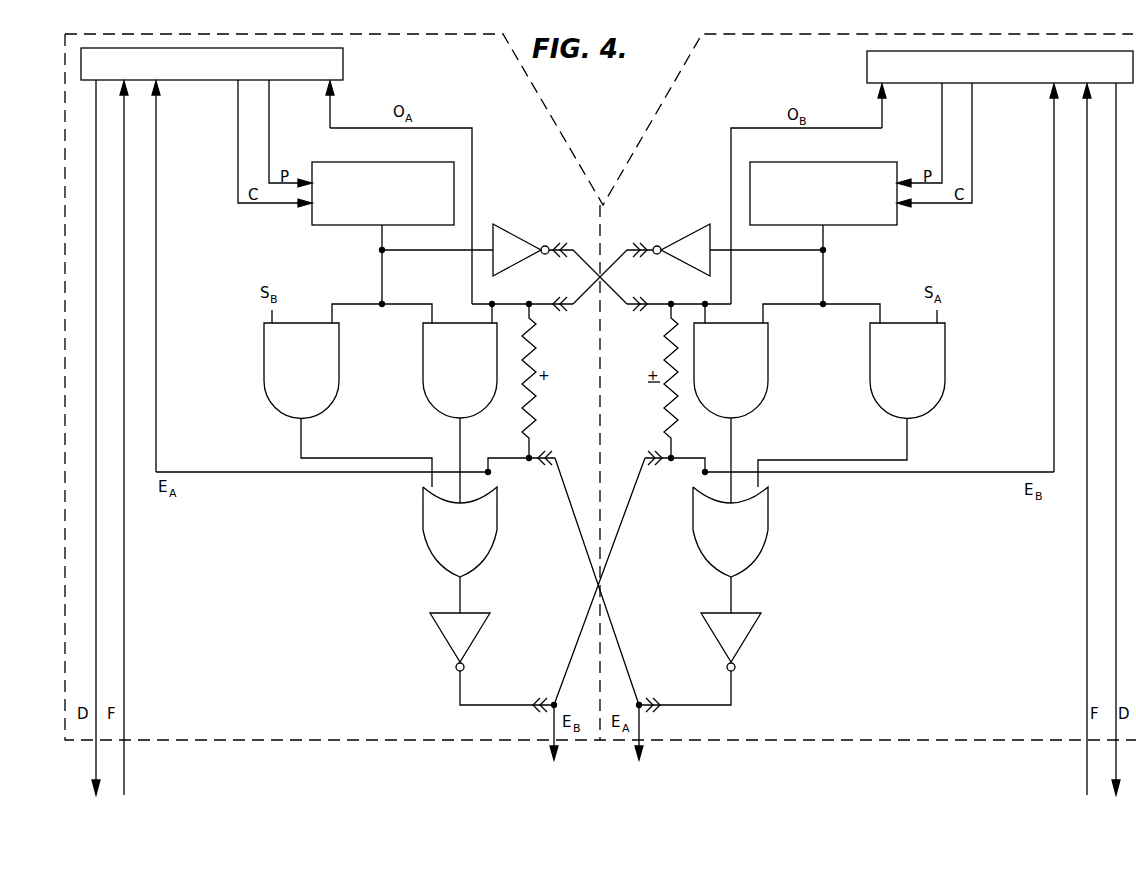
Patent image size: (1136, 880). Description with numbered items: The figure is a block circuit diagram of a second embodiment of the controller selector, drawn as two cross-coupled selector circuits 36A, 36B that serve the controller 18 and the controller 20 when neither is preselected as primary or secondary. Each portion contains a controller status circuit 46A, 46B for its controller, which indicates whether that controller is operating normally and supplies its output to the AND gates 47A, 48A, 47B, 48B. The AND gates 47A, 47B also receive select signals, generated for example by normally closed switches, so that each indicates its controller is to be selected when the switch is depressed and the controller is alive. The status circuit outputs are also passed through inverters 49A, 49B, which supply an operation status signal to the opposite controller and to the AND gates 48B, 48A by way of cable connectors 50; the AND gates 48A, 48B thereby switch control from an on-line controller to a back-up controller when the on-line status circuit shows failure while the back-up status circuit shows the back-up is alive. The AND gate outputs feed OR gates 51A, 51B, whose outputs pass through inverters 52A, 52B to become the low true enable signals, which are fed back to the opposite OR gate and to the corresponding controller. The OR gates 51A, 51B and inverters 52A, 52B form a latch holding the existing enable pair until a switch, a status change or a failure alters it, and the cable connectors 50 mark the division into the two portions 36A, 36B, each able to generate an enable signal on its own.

The controller 20 is at (345, 52).
The controller 18 is at (865, 59).
The controller status circuit 46B is at (318, 160).
The controller status circuit 46A is at (885, 160).
The inverter 49B is at (521, 240).
The inverter 49A is at (679, 240).
The cable connector 50 is at (555, 258).
The AND gate 47B is at (333, 345).
The AND gate 47A is at (947, 345).
The AND gate 48B is at (430, 384).
The AND gate 48A is at (770, 366).
The OR gate 51B is at (488, 530).
The OR gate 51A is at (768, 530).
The inverter 52B is at (445, 648).
The inverter 52A is at (716, 648).
The selector circuit 36B is at (234, 682).
The selector circuit 36A is at (986, 684).